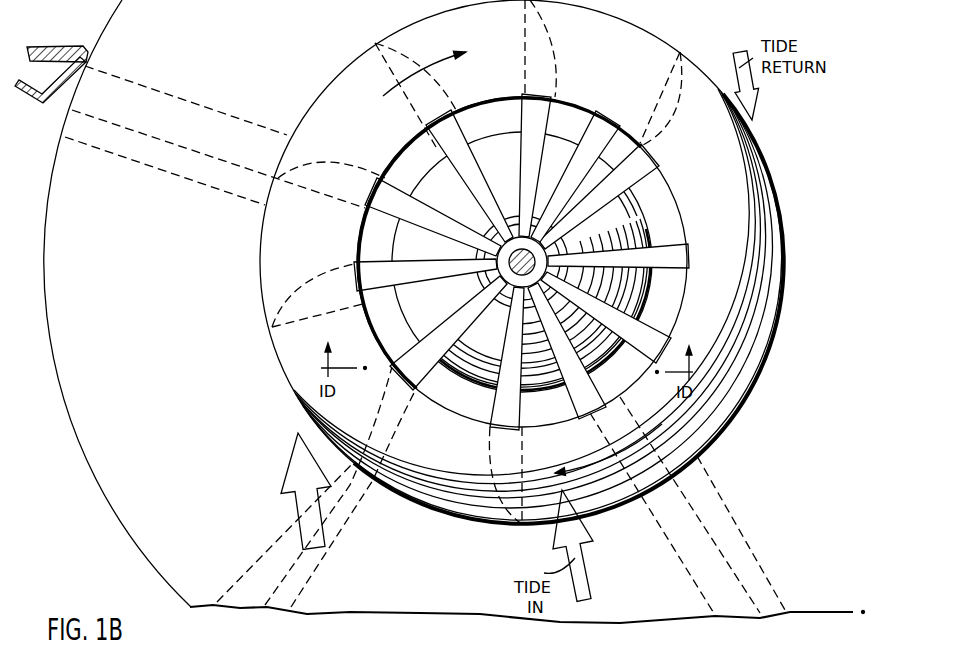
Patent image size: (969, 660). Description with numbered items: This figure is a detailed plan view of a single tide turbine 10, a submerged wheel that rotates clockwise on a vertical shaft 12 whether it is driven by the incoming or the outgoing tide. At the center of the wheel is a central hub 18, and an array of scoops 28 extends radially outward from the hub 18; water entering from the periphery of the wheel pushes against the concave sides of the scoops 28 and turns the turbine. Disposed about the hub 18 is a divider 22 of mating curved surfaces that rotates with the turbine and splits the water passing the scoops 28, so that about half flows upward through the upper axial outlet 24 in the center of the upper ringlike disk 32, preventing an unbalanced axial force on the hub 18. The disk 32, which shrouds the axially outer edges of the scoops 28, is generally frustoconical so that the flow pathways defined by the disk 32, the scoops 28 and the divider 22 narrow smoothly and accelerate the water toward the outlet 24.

The tide turbine 10 is at (262, 375).
The shaft 12 is at (558, 236).
The central hub 18 is at (478, 213).
The divider 22 is at (562, 150).
The upper axial outlet 24 is at (478, 405).
The scoops 28 is at (530, 114).
The upper ringlike disk 32 is at (455, 493).